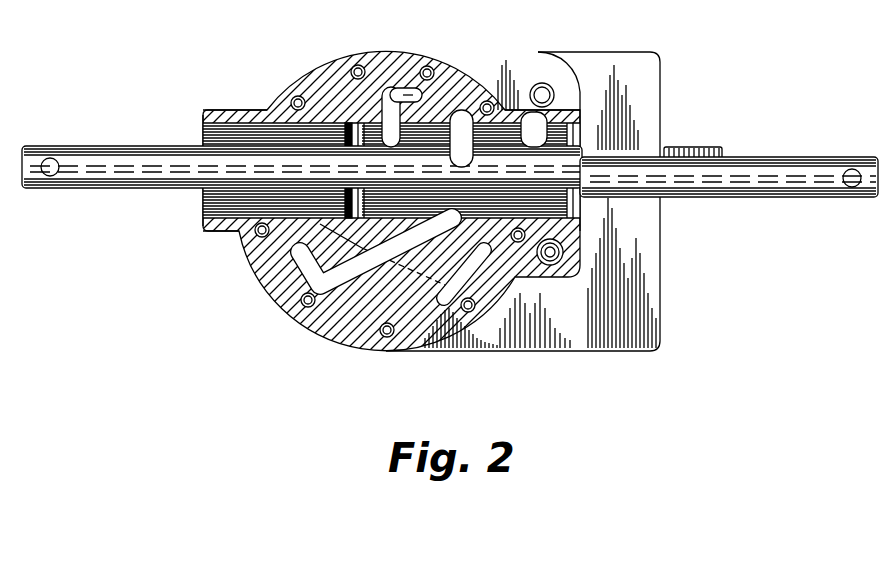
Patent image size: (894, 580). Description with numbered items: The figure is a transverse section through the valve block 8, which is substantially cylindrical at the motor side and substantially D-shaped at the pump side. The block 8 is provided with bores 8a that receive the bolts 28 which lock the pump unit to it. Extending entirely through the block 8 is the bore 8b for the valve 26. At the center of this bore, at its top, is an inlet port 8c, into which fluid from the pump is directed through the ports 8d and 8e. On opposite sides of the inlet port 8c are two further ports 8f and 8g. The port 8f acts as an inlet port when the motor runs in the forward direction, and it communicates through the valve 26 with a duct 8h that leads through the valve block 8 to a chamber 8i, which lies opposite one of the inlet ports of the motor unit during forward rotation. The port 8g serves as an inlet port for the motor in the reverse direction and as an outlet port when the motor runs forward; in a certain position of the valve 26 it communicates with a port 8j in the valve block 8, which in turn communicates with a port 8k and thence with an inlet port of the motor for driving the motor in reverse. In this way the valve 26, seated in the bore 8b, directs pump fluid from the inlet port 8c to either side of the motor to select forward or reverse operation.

The valve block 8 is at (338, 338).
The bores 8a is at (306, 306).
The bore for the valve 8b is at (205, 220).
The inlet port 8c is at (346, 128).
The port 8d is at (347, 130).
The port 8e is at (470, 112).
The port 8f is at (472, 150).
The port 8g is at (345, 110).
The duct 8h is at (455, 265).
The chamber 8i is at (308, 262).
The port 8j is at (322, 226).
The port 8k is at (486, 285).
The valve 26 is at (352, 200).
The bolts 28 is at (388, 338).